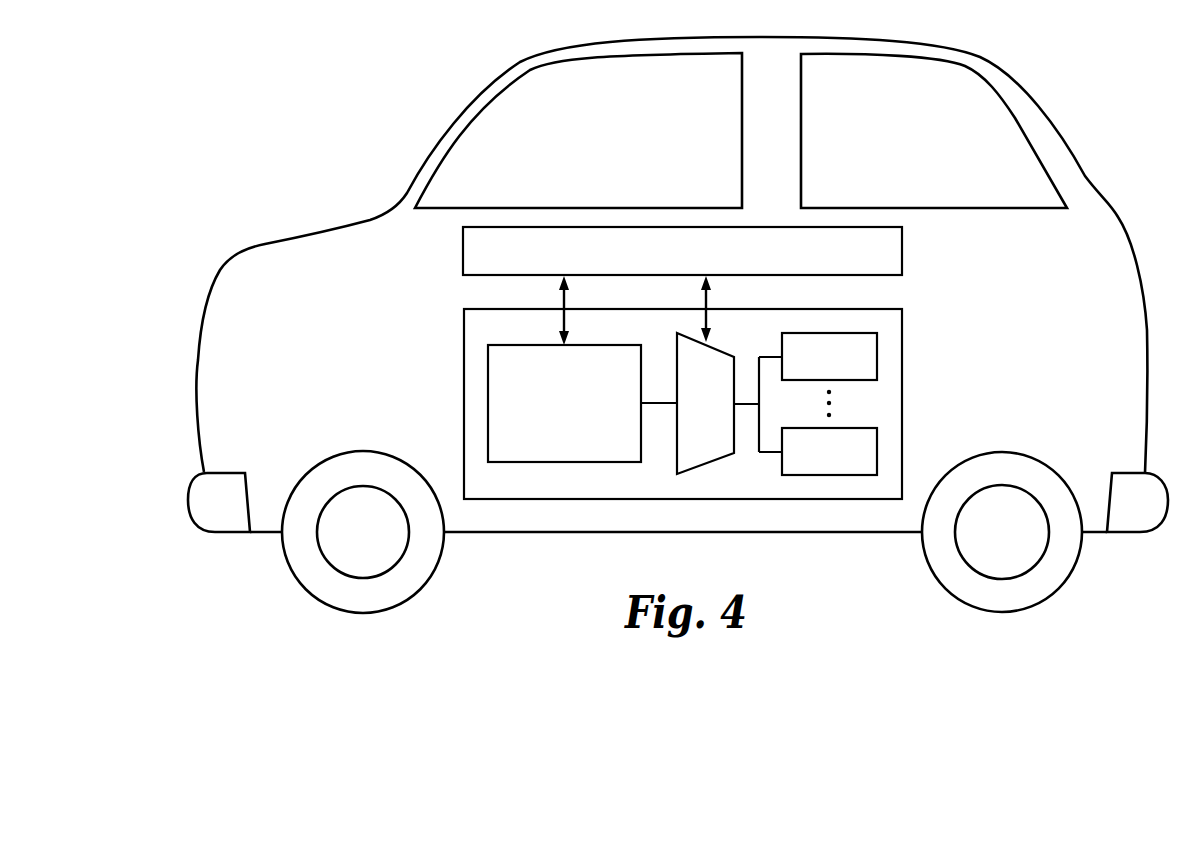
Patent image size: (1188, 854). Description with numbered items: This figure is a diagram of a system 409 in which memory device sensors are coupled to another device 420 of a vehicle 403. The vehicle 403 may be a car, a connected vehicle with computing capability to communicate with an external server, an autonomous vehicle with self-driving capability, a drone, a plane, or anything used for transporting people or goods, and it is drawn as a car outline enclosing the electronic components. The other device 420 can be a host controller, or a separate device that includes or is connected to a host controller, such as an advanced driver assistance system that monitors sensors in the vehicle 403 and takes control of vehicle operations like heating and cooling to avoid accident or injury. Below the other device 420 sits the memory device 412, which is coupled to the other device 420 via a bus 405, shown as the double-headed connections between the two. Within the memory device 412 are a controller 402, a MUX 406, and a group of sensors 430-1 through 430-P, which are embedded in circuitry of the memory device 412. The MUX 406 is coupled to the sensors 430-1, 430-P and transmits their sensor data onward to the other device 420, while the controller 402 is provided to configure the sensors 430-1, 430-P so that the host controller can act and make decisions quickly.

The system 409 is at (262, 61).
The vehicle 403 is at (1071, 182).
The other device 420 is at (472, 250).
The bus 405 is at (742, 291).
The memory device 412 is at (475, 328).
The controller 402 is at (492, 405).
The MUX 406 is at (704, 455).
The sensor 430-1 is at (876, 358).
The sensor 430-P is at (876, 452).